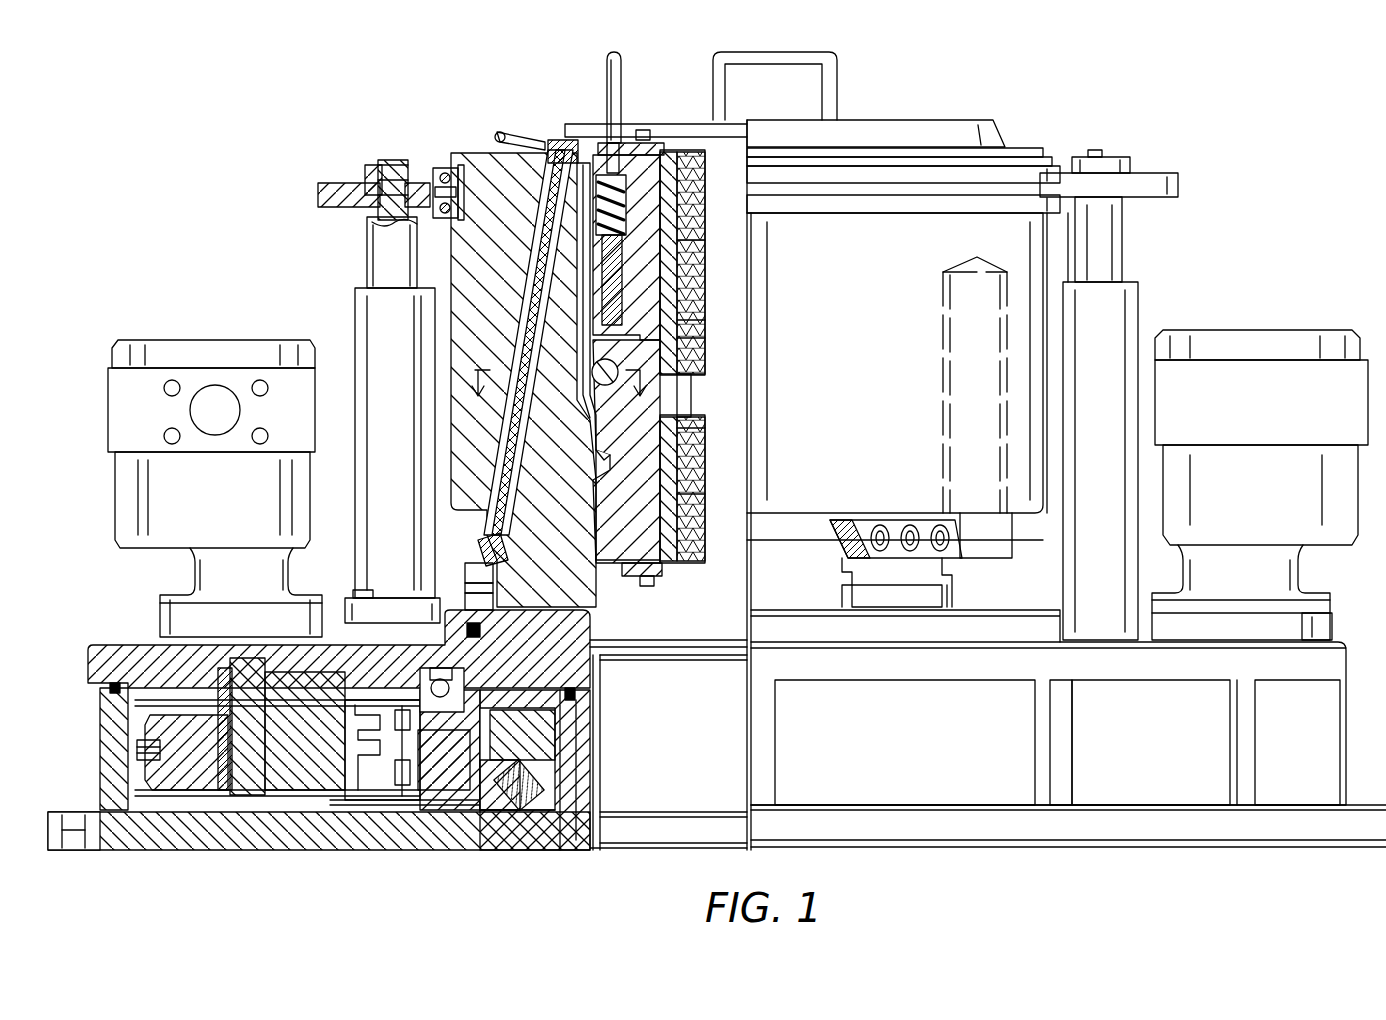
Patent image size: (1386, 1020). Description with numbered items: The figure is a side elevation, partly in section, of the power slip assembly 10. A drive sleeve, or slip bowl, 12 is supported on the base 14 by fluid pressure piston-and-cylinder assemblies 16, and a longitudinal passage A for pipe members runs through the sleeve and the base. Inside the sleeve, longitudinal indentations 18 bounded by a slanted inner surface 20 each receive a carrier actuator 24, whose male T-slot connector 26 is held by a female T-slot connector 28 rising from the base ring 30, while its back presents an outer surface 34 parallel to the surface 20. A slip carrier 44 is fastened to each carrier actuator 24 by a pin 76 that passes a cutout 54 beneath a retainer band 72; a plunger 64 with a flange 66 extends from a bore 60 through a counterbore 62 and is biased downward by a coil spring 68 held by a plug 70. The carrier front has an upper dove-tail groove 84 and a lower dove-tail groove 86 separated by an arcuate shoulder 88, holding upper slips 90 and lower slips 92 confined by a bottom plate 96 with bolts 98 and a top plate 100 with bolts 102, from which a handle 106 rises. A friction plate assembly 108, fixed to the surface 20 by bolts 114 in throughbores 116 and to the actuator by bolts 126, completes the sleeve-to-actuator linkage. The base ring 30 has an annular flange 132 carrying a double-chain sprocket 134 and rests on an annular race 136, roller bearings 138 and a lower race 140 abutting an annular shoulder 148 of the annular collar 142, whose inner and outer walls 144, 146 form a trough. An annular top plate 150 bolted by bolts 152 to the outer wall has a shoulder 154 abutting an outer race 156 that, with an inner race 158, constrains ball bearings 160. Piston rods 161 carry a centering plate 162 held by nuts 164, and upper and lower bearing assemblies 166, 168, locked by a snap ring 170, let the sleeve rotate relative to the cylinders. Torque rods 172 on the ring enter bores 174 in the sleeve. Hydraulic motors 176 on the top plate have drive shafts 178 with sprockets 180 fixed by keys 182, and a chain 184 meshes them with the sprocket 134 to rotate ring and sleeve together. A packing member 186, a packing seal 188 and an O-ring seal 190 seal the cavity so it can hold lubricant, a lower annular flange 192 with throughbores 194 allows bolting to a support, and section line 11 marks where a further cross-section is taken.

The power slip assembly 10 is at (205, 128).
The drive sleeve 12 is at (952, 128).
The base 14 is at (1025, 848).
The fluid pressure piston-and-cylinder assemblies 16 is at (362, 303).
The longitudinal indentations 18 is at (587, 148).
The slanted inner surface 20 is at (495, 492).
The carrier actuator 24 is at (470, 598).
The male T-slot connector 26 is at (937, 600).
The female T-slot connector 28 is at (465, 575).
The base ring 30 is at (694, 632).
The outer surface 34 is at (418, 272).
The slip carrier 44 is at (648, 555).
The cutout 54 is at (607, 478).
The bore 60 is at (628, 212).
The counterbore 62 is at (692, 320).
The plunger 64 is at (692, 338).
The flange 66 is at (695, 292).
The coil spring 68 is at (640, 178).
The plug 70 is at (620, 160).
The retainer band 72 is at (610, 455).
The pin 76 is at (680, 362).
The upper longitudinal dove-tail groove 84 is at (690, 262).
The lower dove-tail groove 86 is at (692, 428).
The arcuate transversely-extending shoulder 88 is at (692, 397).
The upper slips 90 is at (695, 240).
The lower slips 92 is at (692, 494).
The bottom plate 96 is at (665, 568).
The bolts 98 is at (648, 586).
The top plate 100 is at (670, 145).
The bolts 102 is at (655, 130).
The handle 106 is at (620, 55).
The friction plate assembly 108 is at (520, 330).
The bolts 114 is at (560, 140).
The throughbores 116 is at (495, 132).
The bolts 126 is at (478, 545).
The annular flange 132 is at (440, 790).
The double-chain sprocket 134 is at (378, 790).
The annular race 136 is at (540, 750).
The roller bearings 138 is at (565, 798).
The second annular race 140 is at (555, 825).
The annular collar 142 is at (248, 850).
The inner wall 144 is at (590, 776).
The outer wall 146 is at (104, 790).
The annular shoulder 148 is at (490, 820).
The annular top plate 150 is at (90, 652).
The bolts 152 is at (1326, 620).
The annular shoulder 154 is at (398, 790).
The outer annular race 156 is at (428, 810).
The inner annular race 158 is at (470, 712).
The ball bearings 160 is at (465, 805).
The piston rods 161 is at (390, 162).
The centering plate 162 is at (318, 193).
The nuts 164 is at (366, 178).
The upper bearing assembly 166 is at (440, 167).
The lower bearing assembly 168 is at (378, 219).
The snap ring 170 is at (460, 165).
The torque rods 172 is at (1005, 530).
The bores 174 is at (1000, 292).
The hydraulic motors 176 is at (196, 340).
The drive shaft 178 is at (250, 775).
The sprocket 180 is at (180, 780).
The key 182 is at (228, 780).
The chain 184 is at (137, 748).
The packing member 186 is at (578, 693).
The packing seal 188 is at (482, 630).
The O-ring seal 190 is at (110, 680).
The lower annular flange 192 is at (50, 825).
The throughbores 194 is at (80, 843).
The section line 11 is at (564, 396).
The passage A is at (747, 398).